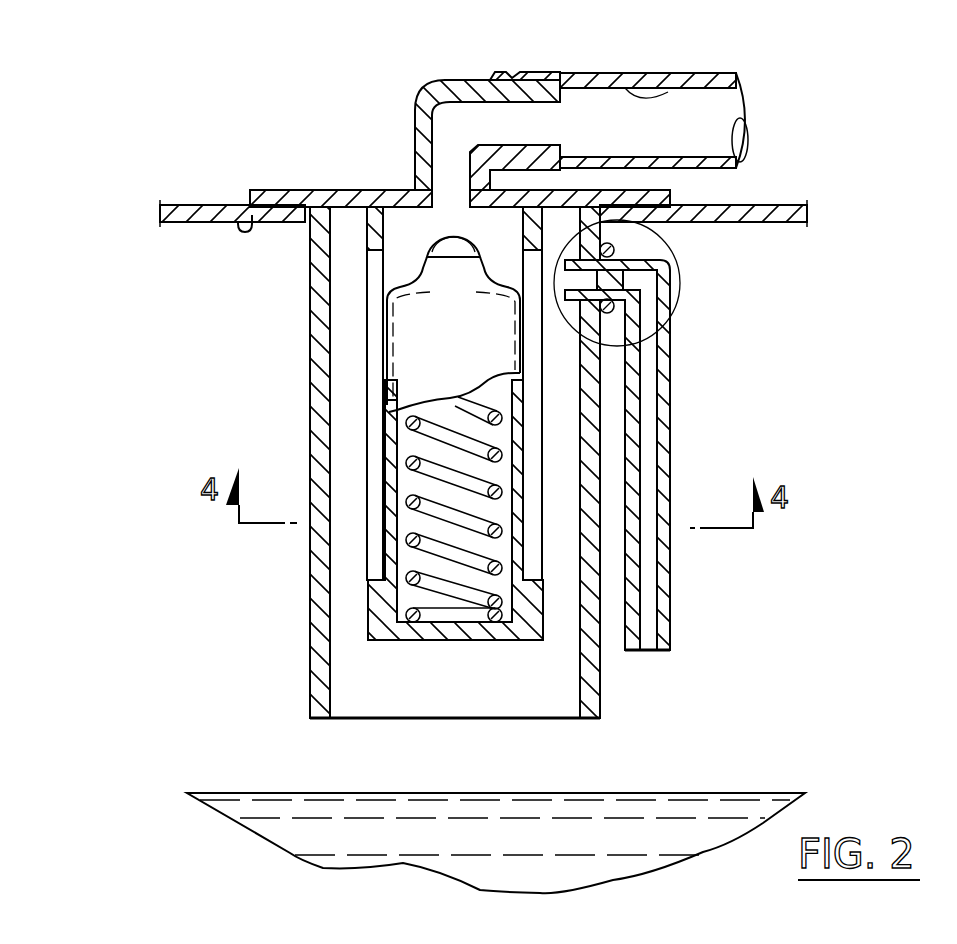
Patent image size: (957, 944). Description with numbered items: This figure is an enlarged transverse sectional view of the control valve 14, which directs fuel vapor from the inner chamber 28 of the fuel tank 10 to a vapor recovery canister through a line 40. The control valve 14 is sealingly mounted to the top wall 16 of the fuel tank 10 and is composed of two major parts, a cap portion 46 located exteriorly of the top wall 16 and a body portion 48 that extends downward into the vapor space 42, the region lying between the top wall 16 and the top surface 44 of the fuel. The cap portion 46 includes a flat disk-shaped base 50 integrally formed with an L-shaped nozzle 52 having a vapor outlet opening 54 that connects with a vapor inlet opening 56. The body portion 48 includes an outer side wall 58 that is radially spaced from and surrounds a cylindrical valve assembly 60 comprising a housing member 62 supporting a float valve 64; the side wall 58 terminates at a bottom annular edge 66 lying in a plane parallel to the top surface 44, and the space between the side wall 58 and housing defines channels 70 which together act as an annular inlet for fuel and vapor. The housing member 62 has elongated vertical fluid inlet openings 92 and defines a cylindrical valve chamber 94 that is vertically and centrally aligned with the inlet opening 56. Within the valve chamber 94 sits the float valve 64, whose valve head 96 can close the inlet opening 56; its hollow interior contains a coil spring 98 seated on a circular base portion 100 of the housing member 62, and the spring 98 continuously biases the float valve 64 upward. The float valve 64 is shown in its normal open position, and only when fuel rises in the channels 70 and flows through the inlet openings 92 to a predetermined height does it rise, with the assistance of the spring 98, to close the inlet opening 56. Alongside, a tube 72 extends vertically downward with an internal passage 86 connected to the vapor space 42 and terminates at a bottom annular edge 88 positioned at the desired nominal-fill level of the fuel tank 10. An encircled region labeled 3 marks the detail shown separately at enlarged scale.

The detail section circle 3 is at (676, 262).
The fuel tank 10 is at (788, 201).
The control valve 14 is at (778, 627).
The top wall 16 is at (194, 204).
The inner chamber 28 is at (238, 204).
The line 40 is at (737, 105).
The vapor space 42 is at (805, 332).
The top surface of the fuel 44 is at (682, 793).
The cap portion 46 is at (412, 124).
The body portion 48 is at (307, 609).
The base 50 is at (300, 188).
The L-shaped nozzle 52 is at (478, 80).
The vapor outlet opening 54 is at (642, 98).
The vapor inlet opening 56 is at (448, 178).
The outer side wall 58 is at (309, 663).
The cylindrical valve assembly 60 is at (357, 391).
The housing member 62 is at (363, 622).
The float valve 64 is at (470, 355).
The bottom annular edge 66 is at (545, 720).
The channels 70 is at (343, 514).
The tube 72 is at (676, 590).
The passage 86 is at (653, 430).
The bottom annular edge 88 is at (656, 652).
The fluid inlet openings 92 is at (374, 409).
The valve chamber 94 is at (385, 255).
The valve head 96 is at (440, 232).
The coil spring 98 is at (482, 480).
The circular base portion 100 is at (480, 632).